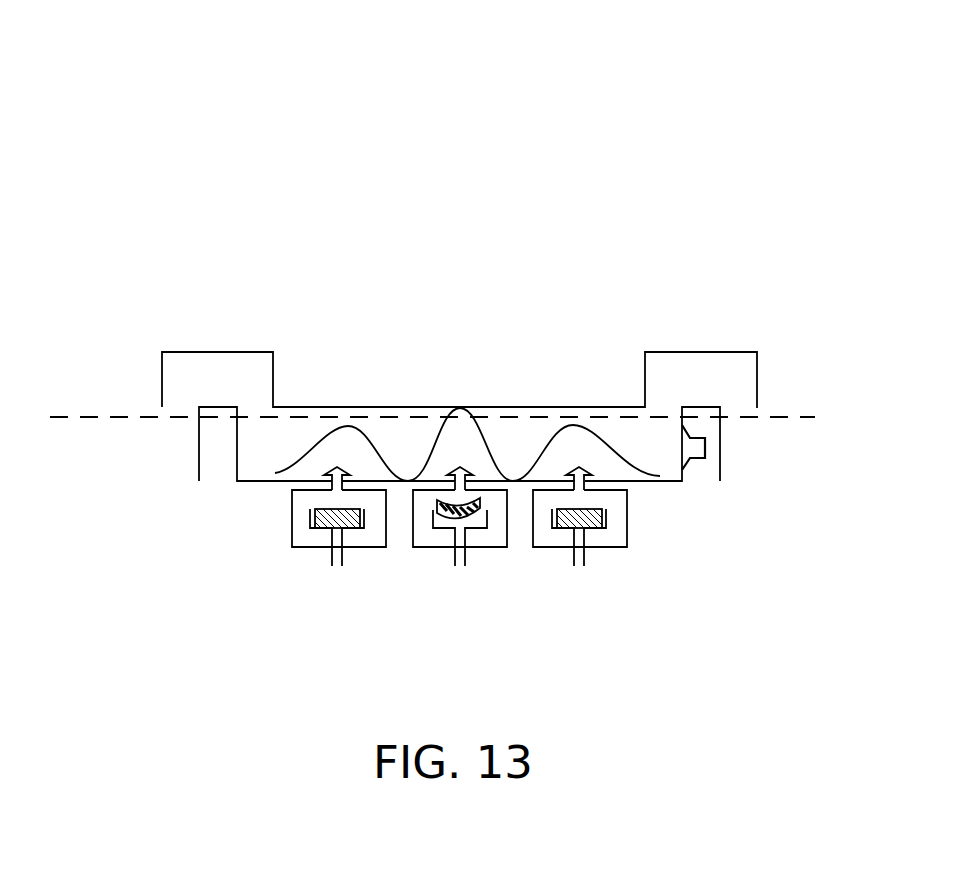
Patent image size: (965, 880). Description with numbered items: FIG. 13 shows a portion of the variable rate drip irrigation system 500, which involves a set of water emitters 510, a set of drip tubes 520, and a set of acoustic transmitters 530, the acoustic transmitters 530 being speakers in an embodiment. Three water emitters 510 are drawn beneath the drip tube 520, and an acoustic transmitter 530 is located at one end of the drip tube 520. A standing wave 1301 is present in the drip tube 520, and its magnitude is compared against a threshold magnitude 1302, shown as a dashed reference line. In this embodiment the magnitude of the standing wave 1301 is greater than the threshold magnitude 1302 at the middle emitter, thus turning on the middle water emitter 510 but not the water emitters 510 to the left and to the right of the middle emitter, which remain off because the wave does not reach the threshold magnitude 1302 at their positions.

The variable rate drip irrigation system 500 is at (846, 70).
The water emitters 510 is at (268, 519).
The drip tubes 520 is at (759, 290).
The acoustic transmitters 530 is at (697, 480).
The standing wave 1301 is at (380, 428).
The threshold magnitude 1302 is at (63, 402).